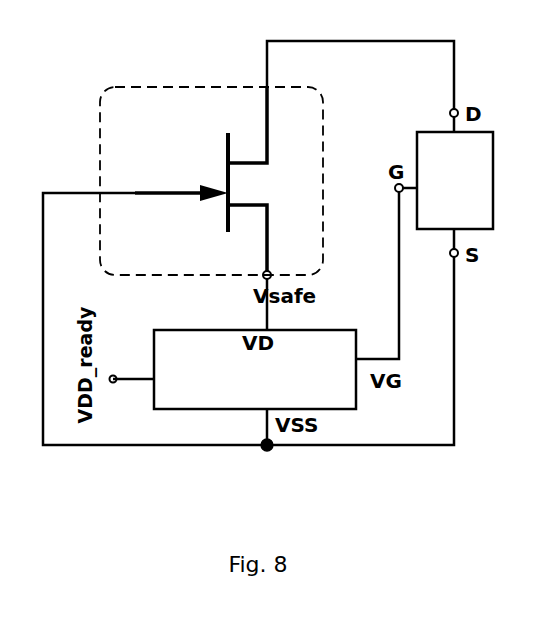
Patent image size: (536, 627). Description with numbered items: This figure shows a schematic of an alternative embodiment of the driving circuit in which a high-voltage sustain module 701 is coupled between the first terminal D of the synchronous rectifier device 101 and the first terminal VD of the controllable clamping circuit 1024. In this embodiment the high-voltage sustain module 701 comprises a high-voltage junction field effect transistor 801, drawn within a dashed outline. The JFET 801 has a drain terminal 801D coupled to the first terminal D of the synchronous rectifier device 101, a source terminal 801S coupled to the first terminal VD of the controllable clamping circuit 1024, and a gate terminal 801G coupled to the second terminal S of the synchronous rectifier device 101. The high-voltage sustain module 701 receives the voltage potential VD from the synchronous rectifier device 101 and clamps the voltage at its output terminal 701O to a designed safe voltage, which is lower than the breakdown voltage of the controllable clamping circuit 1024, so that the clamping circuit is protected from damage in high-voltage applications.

The high-voltage sustain module 701 is at (112, 73).
The output terminal 701O is at (262, 278).
The high-voltage junction field effect transistor 801 is at (212, 183).
The drain terminal 801D is at (266, 132).
The gate terminal 801G is at (190, 194).
The source terminal 801S is at (266, 245).
The synchronous rectifier device 101 is at (436, 199).
The controllable clamping circuit 1024 is at (229, 389).